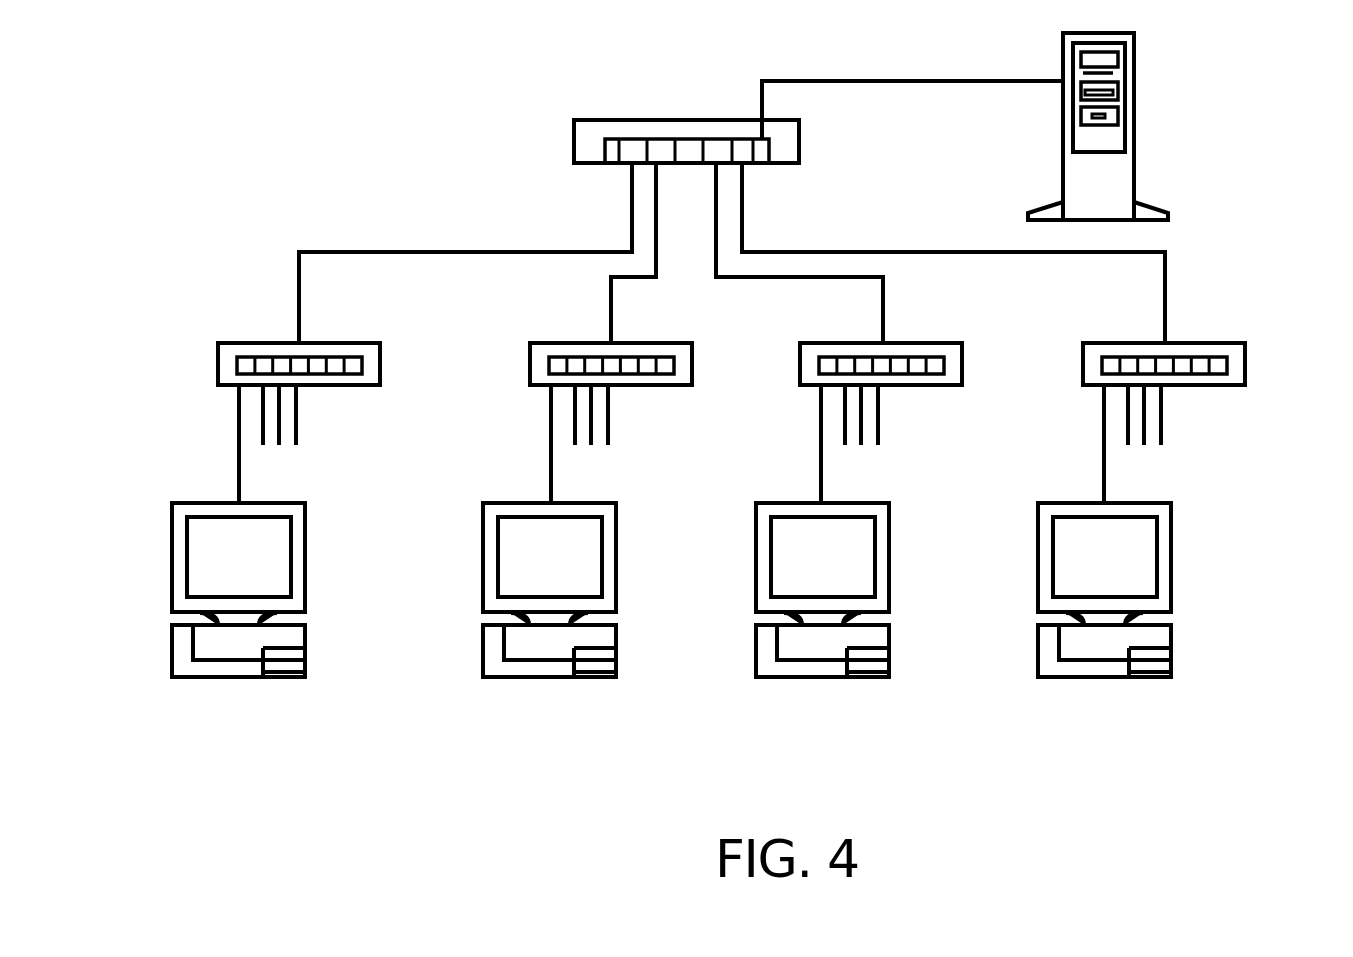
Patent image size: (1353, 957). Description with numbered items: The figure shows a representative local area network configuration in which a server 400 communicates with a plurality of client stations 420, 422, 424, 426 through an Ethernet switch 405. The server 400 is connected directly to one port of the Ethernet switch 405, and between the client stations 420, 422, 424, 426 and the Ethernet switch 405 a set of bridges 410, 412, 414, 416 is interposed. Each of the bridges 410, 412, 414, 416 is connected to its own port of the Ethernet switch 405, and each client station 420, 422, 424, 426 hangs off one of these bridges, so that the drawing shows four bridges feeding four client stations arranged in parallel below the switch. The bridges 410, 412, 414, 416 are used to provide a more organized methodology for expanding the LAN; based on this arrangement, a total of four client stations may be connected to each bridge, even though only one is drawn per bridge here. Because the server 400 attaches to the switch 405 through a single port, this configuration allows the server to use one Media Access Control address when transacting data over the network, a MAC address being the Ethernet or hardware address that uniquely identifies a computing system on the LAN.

The server 400 is at (1118, 172).
The Ethernet switch 405 is at (597, 128).
The bridge 410 is at (370, 377).
The bridge 412 is at (682, 377).
The bridge 414 is at (952, 377).
The bridge 416 is at (1235, 377).
The client station 420 is at (293, 640).
The client station 422 is at (604, 640).
The client station 424 is at (877, 640).
The client station 426 is at (1159, 640).